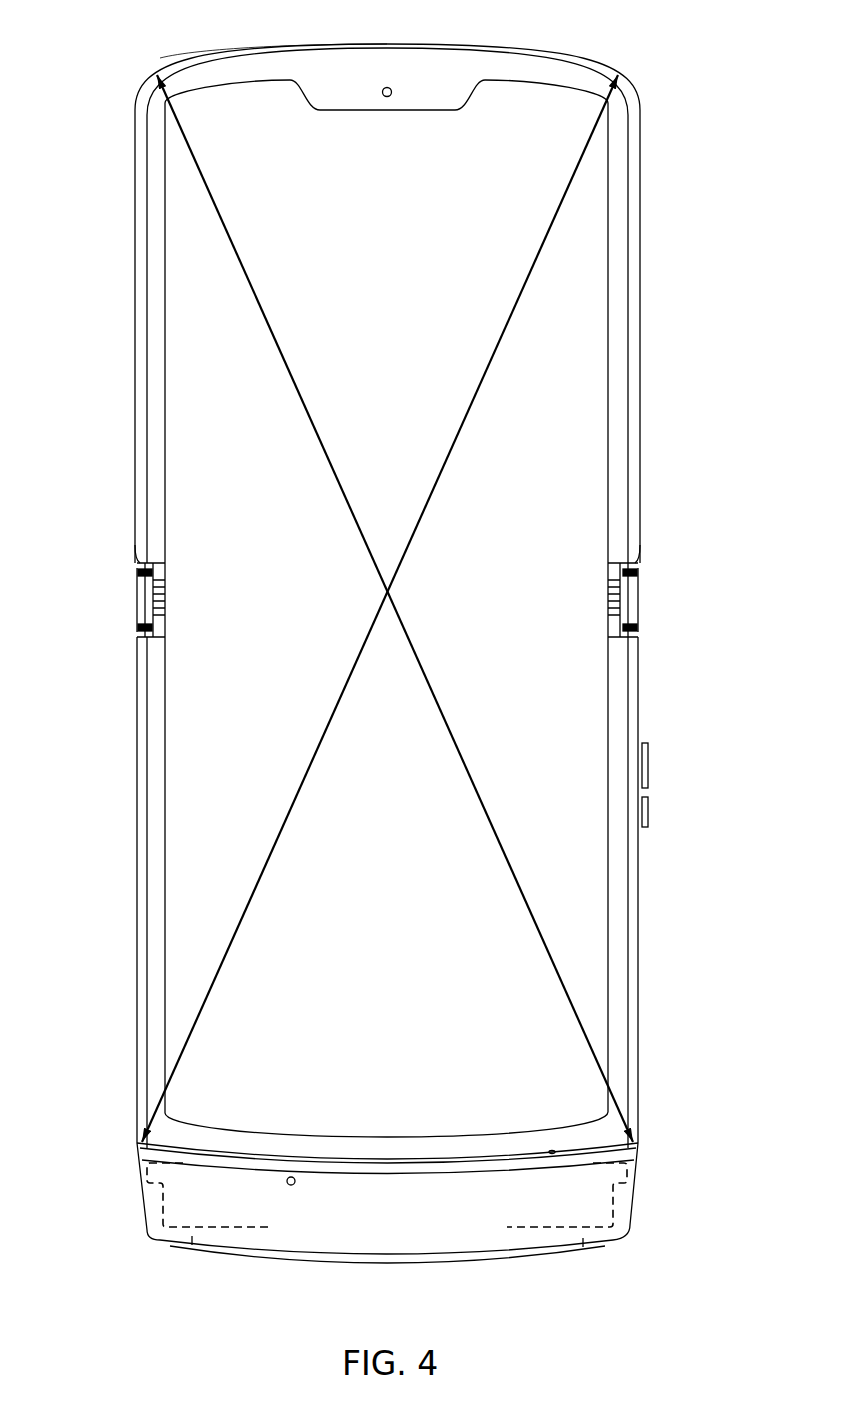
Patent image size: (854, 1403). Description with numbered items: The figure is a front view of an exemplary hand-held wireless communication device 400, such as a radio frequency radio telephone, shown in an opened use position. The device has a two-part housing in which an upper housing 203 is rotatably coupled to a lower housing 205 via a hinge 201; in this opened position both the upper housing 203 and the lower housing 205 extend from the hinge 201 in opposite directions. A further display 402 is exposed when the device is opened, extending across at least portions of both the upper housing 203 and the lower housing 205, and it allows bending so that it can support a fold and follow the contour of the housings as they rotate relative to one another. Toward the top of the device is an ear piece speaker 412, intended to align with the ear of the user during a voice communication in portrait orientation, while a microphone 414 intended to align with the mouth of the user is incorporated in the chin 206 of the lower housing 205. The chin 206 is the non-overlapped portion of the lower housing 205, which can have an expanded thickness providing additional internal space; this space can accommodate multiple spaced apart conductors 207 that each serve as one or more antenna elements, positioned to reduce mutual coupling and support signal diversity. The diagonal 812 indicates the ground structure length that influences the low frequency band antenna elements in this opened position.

The hand-held wireless communication device 400 is at (650, 46).
The upper housing 203 is at (636, 284).
The lower housing 205 is at (636, 905).
The hinge 201 is at (145, 600).
The further display 402 is at (577, 410).
The ear piece speaker 412 is at (387, 45).
The diagonal 812 is at (258, 313).
The microphone 414 is at (295, 1185).
The conductors 207 is at (263, 1228).
The chin 206 is at (572, 1200).